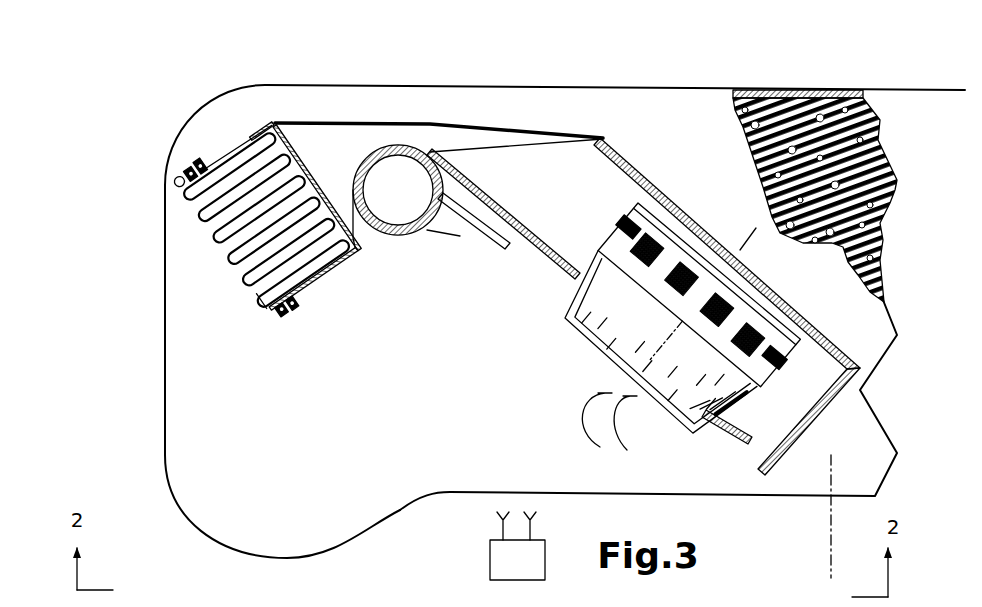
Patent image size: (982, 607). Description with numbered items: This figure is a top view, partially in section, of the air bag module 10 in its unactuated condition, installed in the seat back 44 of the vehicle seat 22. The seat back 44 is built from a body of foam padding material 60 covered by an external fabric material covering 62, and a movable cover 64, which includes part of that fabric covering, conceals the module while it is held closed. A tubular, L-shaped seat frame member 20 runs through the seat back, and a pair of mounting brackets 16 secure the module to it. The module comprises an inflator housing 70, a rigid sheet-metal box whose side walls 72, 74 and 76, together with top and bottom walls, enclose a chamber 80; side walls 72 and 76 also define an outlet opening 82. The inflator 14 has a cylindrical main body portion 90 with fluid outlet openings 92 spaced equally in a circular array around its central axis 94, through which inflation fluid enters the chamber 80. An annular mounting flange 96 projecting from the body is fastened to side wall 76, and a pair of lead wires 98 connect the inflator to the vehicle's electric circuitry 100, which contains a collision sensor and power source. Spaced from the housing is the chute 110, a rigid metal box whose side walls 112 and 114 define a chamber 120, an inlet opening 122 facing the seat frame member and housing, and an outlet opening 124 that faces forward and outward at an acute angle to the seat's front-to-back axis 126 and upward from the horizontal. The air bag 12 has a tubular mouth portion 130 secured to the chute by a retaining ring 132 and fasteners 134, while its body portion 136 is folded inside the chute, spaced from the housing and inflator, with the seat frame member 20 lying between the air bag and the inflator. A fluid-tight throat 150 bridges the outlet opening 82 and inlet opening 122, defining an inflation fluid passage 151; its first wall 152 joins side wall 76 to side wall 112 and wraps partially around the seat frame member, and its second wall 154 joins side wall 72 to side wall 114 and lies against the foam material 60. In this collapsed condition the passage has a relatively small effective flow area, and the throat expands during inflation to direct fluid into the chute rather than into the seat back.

The air bag module 10 is at (475, 243).
The air bag 12 is at (228, 218).
The inflator 14 is at (654, 319).
The mounting brackets 16 is at (450, 240).
The seat frame member 20 is at (412, 237).
The vehicle seat 22 is at (187, 510).
The seat back 44 is at (163, 420).
The foam padding material 60 is at (835, 150).
The fabric material covering 62 is at (757, 92).
The movable cover 64 is at (163, 372).
The inflator housing 70 is at (728, 309).
The side wall 72 is at (673, 195).
The side wall 74 is at (797, 433).
The side wall 76 is at (545, 258).
The chamber 80 is at (518, 203).
The outlet opening 82 is at (507, 140).
The main body portion 90 is at (699, 295).
The fluid outlet openings 92 is at (698, 295).
The central axis 94 is at (750, 244).
The mounting flange 96 is at (718, 400).
The lead wires 98 is at (609, 433).
The electric circuitry 100 is at (492, 556).
The chute 110 is at (266, 220).
The side wall 112 is at (273, 217).
The side wall 114 is at (238, 147).
The chamber 120 is at (261, 301).
The inlet opening 122 is at (262, 131).
The outlet opening 124 is at (180, 182).
The front-to-back axis 126 is at (828, 538).
The mouth portion 130 is at (282, 310).
The retaining ring 132 is at (190, 173).
The fasteners 134 is at (200, 166).
The body portion 136 is at (291, 303).
The throat 150 is at (414, 92).
The inflation fluid passage 151 is at (367, 138).
The first wall 152 is at (355, 242).
The second wall 154 is at (380, 121).